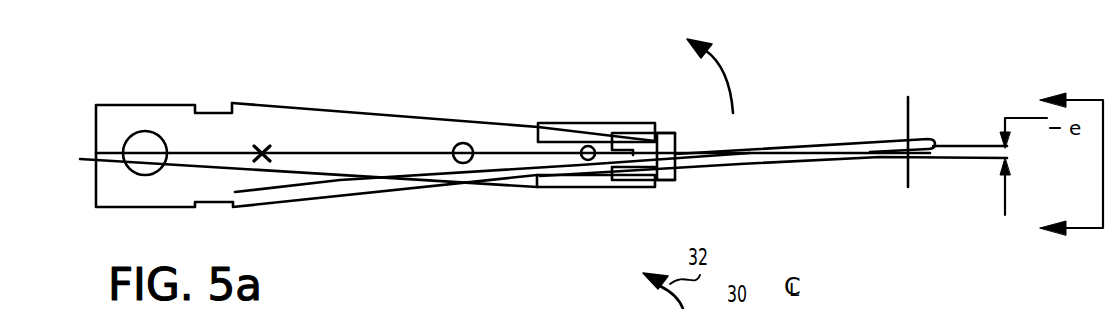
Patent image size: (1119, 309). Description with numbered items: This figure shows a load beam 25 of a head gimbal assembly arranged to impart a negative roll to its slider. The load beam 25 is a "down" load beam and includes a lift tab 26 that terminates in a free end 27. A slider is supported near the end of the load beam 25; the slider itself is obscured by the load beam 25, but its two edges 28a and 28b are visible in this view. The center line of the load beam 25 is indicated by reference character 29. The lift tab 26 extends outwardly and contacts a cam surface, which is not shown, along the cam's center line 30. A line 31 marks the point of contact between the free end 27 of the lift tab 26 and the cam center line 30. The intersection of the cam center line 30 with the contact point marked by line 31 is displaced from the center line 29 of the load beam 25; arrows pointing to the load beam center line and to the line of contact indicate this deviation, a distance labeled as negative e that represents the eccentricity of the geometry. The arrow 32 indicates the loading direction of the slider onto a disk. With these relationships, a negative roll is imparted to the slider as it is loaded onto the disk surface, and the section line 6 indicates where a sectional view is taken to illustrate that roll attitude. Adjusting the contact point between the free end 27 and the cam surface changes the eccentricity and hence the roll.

The load beam 25 is at (322, 143).
The lift tab 26 is at (458, 182).
The free end 27 is at (930, 165).
The edge 28a is at (620, 122).
The edge 28b is at (605, 188).
The center line 29 is at (358, 153).
The center line 30 is at (907, 110).
The line 31 is at (860, 141).
The arrow 32 is at (717, 50).
The section line 6 is at (1060, 163).